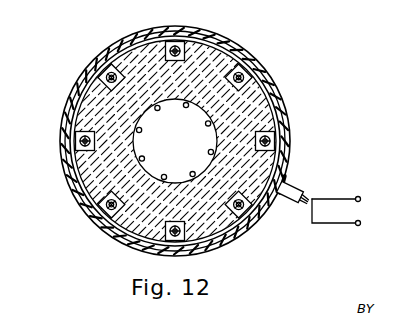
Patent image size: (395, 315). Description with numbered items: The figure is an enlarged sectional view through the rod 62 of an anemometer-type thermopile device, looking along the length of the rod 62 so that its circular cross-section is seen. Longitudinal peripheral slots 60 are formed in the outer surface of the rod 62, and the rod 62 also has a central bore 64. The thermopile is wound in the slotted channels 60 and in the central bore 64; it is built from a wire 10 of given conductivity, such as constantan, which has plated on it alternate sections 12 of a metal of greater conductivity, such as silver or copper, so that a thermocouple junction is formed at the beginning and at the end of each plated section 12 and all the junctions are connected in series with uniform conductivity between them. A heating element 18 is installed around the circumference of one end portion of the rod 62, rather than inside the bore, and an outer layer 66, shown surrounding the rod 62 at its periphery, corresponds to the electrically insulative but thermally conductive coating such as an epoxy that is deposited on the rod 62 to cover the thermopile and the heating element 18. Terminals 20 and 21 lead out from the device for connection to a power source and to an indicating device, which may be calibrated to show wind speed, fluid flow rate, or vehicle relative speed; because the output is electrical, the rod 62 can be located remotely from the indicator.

The wire 10 is at (206, 122).
The plated sections 12 is at (274, 138).
The heating element 18 is at (223, 37).
The terminal 20 is at (361, 199).
The terminal 21 is at (361, 223).
The longitudinal peripheral slots 60 is at (252, 77).
The rod 62 is at (279, 102).
The central bore 64 is at (151, 172).
The outer ring 66 is at (141, 32).